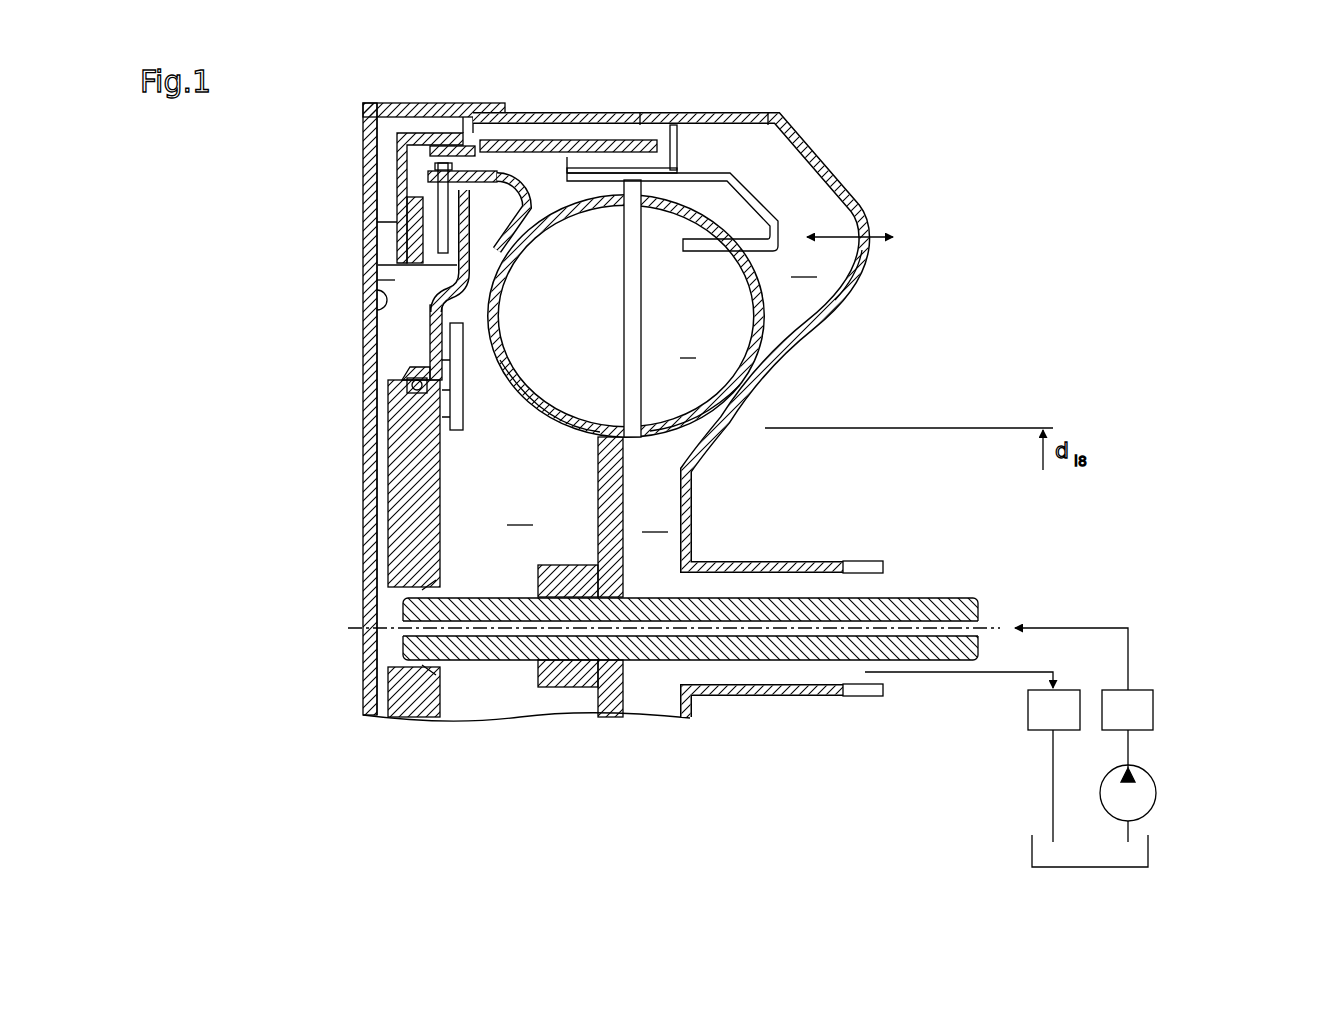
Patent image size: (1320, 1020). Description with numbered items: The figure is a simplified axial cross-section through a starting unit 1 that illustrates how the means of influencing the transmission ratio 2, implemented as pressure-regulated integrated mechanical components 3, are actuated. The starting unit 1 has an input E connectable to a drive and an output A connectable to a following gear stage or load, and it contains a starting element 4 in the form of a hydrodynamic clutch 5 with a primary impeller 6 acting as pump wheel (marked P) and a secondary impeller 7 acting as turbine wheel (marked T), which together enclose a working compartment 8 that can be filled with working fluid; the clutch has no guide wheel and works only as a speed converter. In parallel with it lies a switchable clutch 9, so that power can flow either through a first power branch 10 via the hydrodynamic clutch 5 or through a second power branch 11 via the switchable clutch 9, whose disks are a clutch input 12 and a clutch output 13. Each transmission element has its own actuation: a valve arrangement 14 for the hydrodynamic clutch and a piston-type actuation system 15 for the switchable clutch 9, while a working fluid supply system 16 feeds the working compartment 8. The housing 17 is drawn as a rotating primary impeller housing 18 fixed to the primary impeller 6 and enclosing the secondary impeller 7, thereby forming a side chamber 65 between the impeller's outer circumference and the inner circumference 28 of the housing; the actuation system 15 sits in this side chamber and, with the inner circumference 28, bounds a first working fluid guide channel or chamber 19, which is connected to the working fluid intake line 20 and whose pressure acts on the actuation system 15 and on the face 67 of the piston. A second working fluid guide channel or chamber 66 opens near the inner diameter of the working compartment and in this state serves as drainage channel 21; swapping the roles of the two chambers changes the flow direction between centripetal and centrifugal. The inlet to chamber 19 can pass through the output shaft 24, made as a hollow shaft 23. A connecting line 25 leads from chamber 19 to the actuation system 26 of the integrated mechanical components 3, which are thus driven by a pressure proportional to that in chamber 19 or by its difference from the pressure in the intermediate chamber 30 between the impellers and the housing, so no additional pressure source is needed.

The starting unit 1 is at (598, 100).
The means of influencing the transmission ratio 2 is at (737, 110).
The pressure-regulated integrated mechanical components 3 is at (760, 193).
The starting element 4 is at (626, 231).
The hydrodynamic clutch 5 is at (567, 208).
The primary impeller 6 is at (678, 406).
The secondary impeller 7 is at (552, 378).
The working compartment 8 is at (660, 308).
The switchable clutch 9 is at (497, 167).
The first power branch 10 is at (672, 112).
The second power branch 11 is at (480, 220).
The clutch input 12 is at (420, 240).
The clutch output 13 is at (392, 280).
The valve arrangement 14 is at (1165, 707).
The actuation system 15 is at (430, 348).
The working fluid supply system 16 is at (1165, 778).
The housing 17 is at (355, 199).
The primary impeller housing 18 is at (385, 162).
The first working fluid guide channel or chamber 19 is at (400, 343).
The working fluid intake line 20 is at (1130, 653).
The drainage channel 21 is at (975, 670).
The hollow shaft 23 is at (710, 578).
The output shaft 24 is at (960, 600).
The connecting line 25 is at (355, 199).
The actuation system 26 is at (640, 120).
The inner circumference 28 is at (400, 312).
The intermediate chamber 30 is at (805, 265).
The side chamber 65 is at (521, 513).
The second working fluid guide channel or chamber 66 is at (656, 520).
The face of piston 67 is at (833, 262).
The output A is at (987, 617).
The input E is at (365, 430).
The turbine T is at (557, 303).
The pump P is at (706, 300).